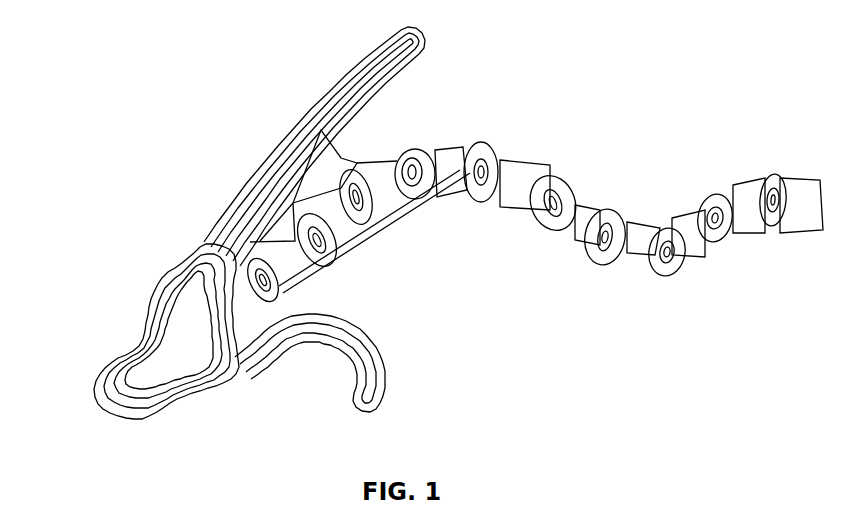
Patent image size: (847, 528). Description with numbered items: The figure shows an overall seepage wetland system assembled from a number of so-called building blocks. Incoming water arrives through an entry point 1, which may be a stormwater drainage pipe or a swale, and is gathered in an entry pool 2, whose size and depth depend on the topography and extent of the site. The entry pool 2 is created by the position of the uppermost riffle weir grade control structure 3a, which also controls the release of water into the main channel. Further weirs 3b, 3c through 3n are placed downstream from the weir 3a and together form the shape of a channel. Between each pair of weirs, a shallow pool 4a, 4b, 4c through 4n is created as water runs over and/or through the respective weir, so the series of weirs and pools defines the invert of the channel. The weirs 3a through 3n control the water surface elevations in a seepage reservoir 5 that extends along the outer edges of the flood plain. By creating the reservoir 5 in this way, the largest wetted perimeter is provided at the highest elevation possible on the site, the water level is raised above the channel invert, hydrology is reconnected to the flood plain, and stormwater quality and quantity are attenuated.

The entry point 1 is at (100, 363).
The entry pool 2 is at (141, 320).
The uppermost riffle weir grade control structure 3a is at (203, 255).
The weir 3b is at (313, 277).
The weir 3c is at (377, 247).
The weir 3n is at (747, 233).
The shallow pool 4a is at (236, 203).
The shallow pool 4b is at (278, 145).
The shallow pool 4c is at (322, 103).
The shallow pool 4n is at (772, 177).
The seepage reservoir 5 is at (377, 83).